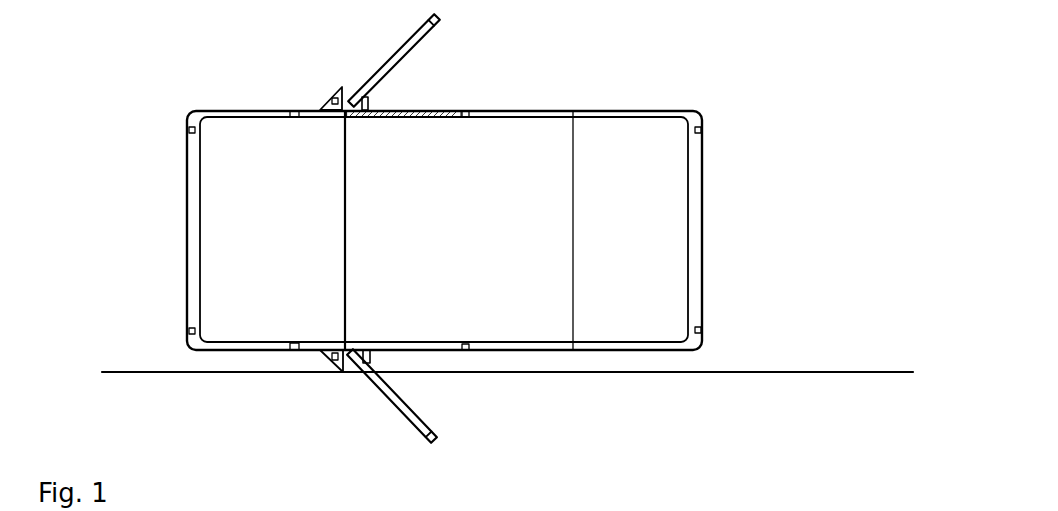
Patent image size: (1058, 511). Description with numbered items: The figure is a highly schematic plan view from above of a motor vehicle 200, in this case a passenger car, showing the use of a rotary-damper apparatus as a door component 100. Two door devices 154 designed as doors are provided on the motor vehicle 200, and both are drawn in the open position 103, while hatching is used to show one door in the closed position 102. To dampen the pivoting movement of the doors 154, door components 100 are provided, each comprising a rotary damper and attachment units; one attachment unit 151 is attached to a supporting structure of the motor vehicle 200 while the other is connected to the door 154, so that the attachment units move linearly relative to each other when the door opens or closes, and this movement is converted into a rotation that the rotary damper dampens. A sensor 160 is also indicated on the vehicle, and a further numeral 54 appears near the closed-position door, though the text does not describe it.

The motor vehicle 200 is at (163, 92).
The door component 100 is at (378, 133).
The open position 103 is at (537, 52).
The closed position 102 is at (409, 48).
The connector 54 is at (466, 122).
The sensor 160 is at (296, 350).
The attachment unit 151 is at (355, 347).
The door device 154 is at (388, 67).